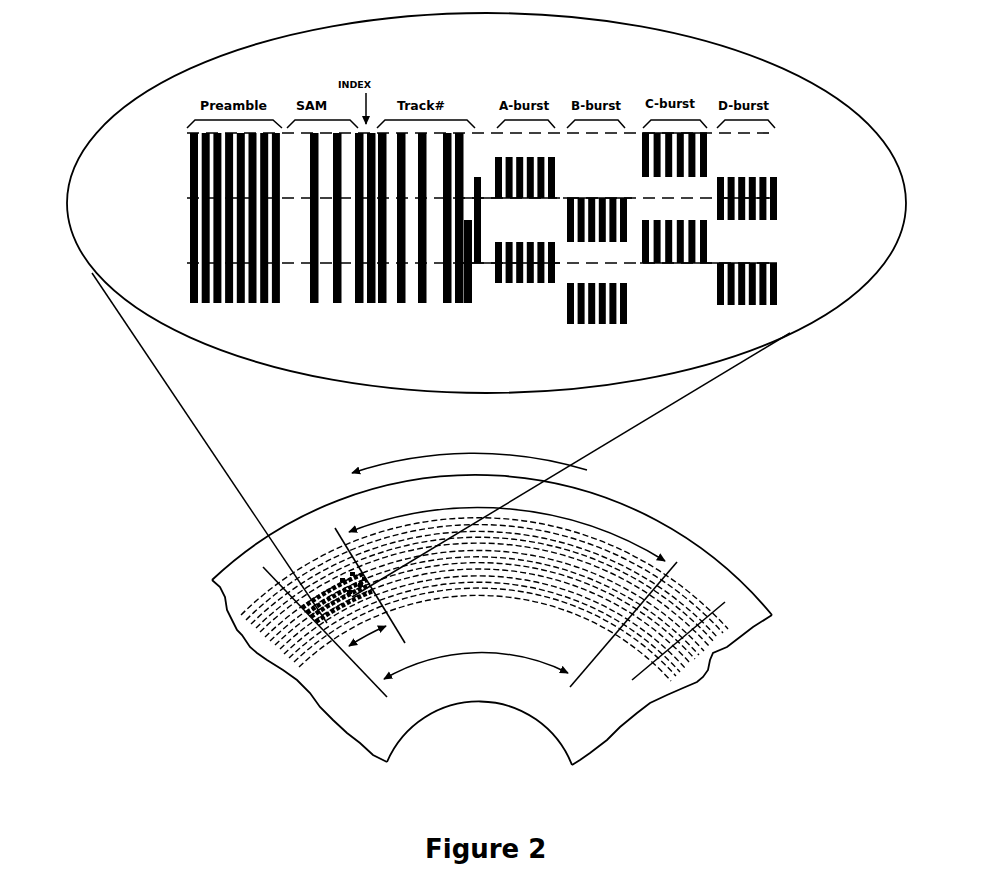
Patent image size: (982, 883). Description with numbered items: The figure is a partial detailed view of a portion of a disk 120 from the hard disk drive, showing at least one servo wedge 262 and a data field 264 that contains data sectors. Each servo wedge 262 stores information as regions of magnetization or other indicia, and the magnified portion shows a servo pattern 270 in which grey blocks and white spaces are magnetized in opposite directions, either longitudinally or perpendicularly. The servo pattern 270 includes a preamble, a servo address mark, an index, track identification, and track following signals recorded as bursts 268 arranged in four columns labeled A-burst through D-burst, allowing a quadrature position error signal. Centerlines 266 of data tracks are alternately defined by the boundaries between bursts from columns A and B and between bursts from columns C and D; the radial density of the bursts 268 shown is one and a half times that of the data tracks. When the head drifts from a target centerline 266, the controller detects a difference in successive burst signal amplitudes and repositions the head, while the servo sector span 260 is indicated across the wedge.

The disk 120 is at (158, 528).
The servo sector 260 is at (554, 624).
The servo wedge 262 is at (334, 612).
The data field 264 is at (507, 526).
The data track centerline 266 is at (771, 137).
The servo burst 268 is at (533, 289).
The servo pattern 270 is at (152, 104).